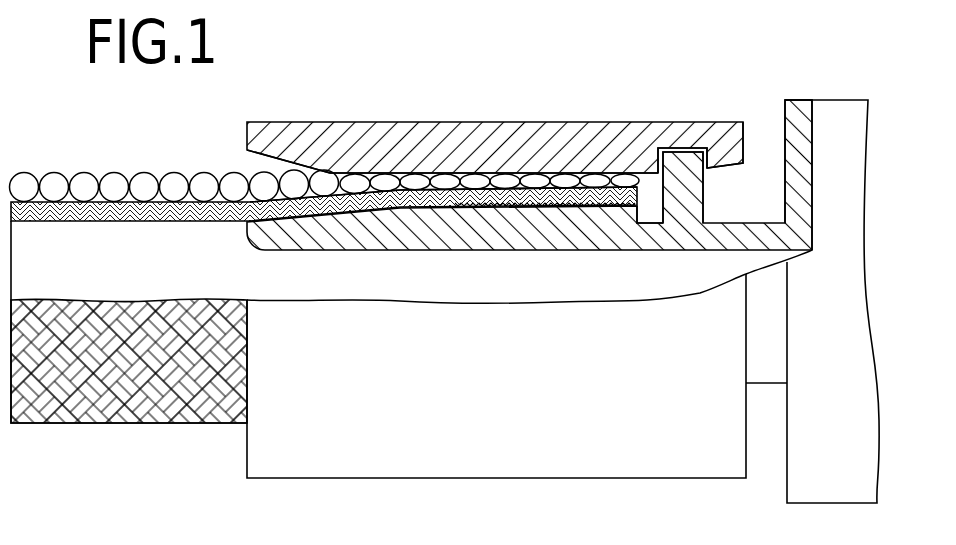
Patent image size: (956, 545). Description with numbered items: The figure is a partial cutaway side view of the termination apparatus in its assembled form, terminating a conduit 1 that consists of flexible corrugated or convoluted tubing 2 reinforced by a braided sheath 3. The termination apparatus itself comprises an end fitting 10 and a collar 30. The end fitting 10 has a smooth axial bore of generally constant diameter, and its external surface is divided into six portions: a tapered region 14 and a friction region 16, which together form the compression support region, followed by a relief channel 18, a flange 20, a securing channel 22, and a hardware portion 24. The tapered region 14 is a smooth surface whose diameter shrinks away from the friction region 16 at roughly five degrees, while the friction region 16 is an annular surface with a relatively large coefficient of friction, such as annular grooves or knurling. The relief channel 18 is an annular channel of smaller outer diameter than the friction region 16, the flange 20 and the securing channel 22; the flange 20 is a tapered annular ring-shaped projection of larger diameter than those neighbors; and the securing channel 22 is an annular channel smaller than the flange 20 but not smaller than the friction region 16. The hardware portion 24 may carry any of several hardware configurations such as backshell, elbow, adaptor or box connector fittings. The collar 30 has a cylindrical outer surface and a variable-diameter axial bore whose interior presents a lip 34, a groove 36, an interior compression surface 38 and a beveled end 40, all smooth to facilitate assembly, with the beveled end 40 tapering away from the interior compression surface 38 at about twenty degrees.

The conduit 1 is at (118, 342).
The flexible corrugated or convoluted tubing 2 is at (65, 206).
The braided sheath 3 is at (143, 186).
The end fitting 10 is at (557, 223).
The tapered region 14 is at (358, 208).
The friction region 16 is at (535, 203).
The relief channel 18 is at (650, 224).
The flange 20 is at (677, 137).
The securing channel 22 is at (752, 222).
The hardware portion 24 is at (825, 172).
The collar 30 is at (378, 145).
The lip 34 is at (723, 157).
The groove 36 is at (692, 137).
The interior compression surface 38 is at (437, 172).
The beveled end 40 is at (292, 156).